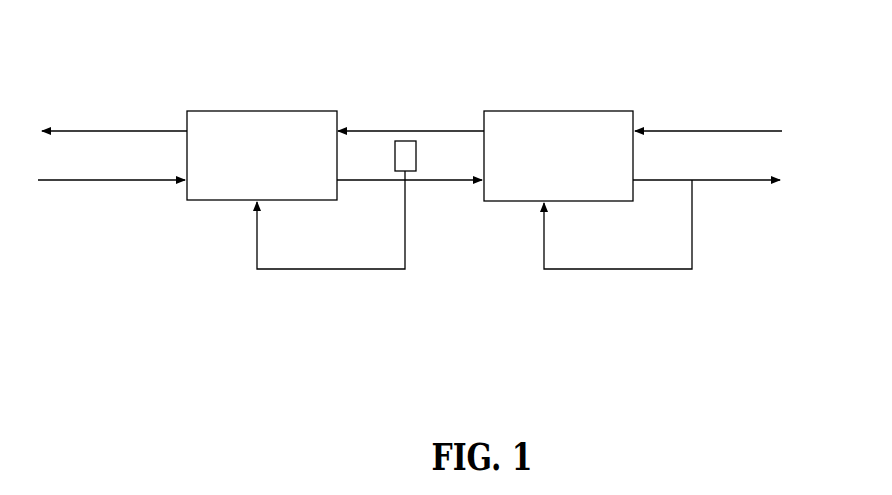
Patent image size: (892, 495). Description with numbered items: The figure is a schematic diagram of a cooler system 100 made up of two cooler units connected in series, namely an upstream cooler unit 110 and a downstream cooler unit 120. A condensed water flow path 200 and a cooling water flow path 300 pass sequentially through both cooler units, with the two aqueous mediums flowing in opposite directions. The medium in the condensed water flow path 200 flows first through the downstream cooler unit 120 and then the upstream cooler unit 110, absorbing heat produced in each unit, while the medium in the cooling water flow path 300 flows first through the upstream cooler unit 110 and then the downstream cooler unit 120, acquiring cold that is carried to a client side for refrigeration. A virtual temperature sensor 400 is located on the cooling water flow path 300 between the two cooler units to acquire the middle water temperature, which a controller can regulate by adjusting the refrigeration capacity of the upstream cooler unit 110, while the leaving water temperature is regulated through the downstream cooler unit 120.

The cooler system 100 is at (575, 302).
The upstream cooler unit 110 is at (267, 142).
The downstream cooler unit 120 is at (555, 140).
The condensed water flow path 200 is at (715, 131).
The cooling water flow path 300 is at (723, 180).
The virtual temperature sensor 400 is at (407, 158).